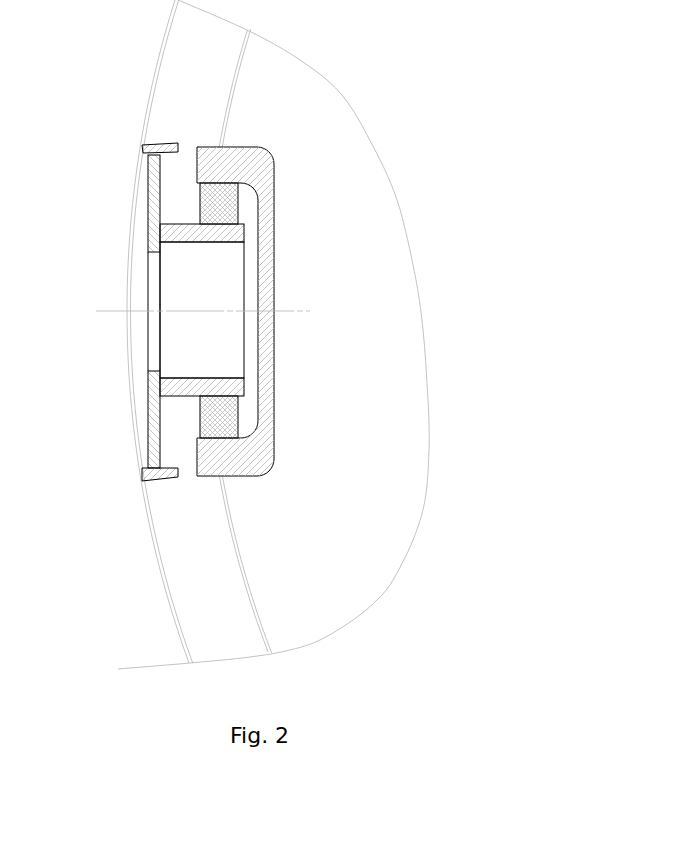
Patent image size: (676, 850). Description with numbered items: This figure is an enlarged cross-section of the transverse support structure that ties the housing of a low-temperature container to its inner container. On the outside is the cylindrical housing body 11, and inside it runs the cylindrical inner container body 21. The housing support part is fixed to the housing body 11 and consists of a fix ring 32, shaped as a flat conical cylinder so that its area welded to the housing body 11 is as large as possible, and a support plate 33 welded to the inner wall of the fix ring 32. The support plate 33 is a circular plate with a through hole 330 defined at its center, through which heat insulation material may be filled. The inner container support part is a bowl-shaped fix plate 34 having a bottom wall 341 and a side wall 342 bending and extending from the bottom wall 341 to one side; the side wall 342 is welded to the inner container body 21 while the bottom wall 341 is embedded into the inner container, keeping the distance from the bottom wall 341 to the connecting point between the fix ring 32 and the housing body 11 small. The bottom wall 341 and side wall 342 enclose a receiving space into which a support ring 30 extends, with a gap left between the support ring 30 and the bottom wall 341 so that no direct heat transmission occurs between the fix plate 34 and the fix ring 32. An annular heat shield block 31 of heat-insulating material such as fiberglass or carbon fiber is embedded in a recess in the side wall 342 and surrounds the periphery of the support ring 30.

The housing body 11 is at (157, 565).
The inner container body 21 is at (237, 548).
The support ring 30 is at (170, 303).
The heat shield block 31 is at (203, 200).
The fix ring 32 is at (143, 150).
The support plate 33 is at (160, 240).
The through hole 330 is at (153, 292).
The fix plate 34 is at (271, 334).
The bottom wall 341 is at (267, 272).
The side wall 342 is at (210, 147).